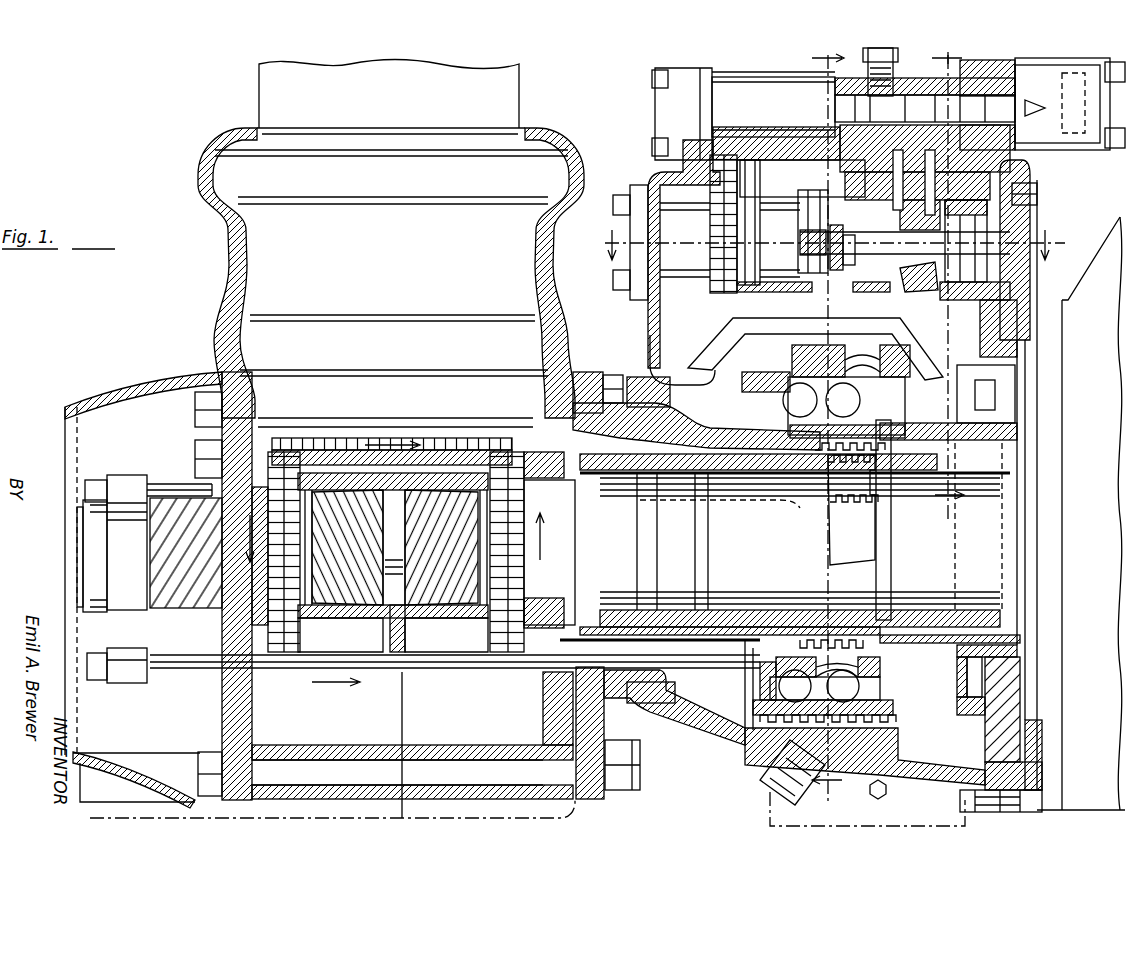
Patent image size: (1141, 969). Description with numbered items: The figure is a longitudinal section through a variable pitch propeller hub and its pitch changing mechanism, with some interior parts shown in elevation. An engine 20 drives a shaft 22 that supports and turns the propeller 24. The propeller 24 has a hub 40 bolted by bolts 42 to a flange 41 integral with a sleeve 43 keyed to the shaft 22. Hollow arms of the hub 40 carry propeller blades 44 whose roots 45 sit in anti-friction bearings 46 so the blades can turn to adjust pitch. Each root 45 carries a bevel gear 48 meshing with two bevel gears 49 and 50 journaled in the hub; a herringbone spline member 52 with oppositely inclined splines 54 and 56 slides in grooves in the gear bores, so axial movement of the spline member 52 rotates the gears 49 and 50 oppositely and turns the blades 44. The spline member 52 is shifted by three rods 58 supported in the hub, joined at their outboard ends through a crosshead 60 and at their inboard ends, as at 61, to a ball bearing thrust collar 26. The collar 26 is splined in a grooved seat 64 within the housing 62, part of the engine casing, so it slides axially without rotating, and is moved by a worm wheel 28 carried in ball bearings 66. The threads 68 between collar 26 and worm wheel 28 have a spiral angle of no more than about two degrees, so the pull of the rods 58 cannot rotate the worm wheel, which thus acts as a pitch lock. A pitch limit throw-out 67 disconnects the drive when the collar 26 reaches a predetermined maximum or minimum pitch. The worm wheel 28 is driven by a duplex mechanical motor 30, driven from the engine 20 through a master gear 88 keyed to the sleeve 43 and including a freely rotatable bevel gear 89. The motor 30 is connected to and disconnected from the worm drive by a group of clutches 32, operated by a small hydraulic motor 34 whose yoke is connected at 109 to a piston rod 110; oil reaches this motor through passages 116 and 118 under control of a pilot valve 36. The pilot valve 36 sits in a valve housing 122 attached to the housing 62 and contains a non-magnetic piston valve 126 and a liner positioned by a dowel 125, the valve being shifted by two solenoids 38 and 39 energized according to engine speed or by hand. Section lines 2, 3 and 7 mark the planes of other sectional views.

The section line 2- 2 is at (819, 422).
The section line 3- 3 is at (832, 245).
The section line 7- 7 is at (950, 281).
The engine 20 is at (1081, 513).
The propeller shaft 22 is at (781, 545).
The propeller 24 is at (196, 293).
The ball bearing thrust collar 26 is at (752, 672).
The worm wheel 28 is at (770, 780).
The duplex mechanical motor 30 is at (1010, 368).
The group of clutches 32 is at (765, 200).
The hydraulic motor 34 is at (1020, 183).
The pilot valve 36 is at (776, 118).
The solenoid 38 is at (1020, 95).
The solenoid 39 is at (660, 122).
The hub 40 is at (230, 255).
The flange 41 is at (585, 372).
The bolts 42 is at (612, 375).
The sleeve 43 is at (718, 432).
The propeller blades 44 is at (259, 98).
The blade roots 45 is at (393, 291).
The anti-friction bearings 46 is at (210, 180).
The bevel gear 48 is at (318, 440).
The bevel gear 49 is at (524, 508).
The bevel gear 50 is at (268, 505).
The herringbone spline member 52 is at (78, 570).
The inclined splines 54 is at (448, 600).
The inclined splines 56 is at (358, 600).
The rods 58 is at (165, 488).
The crosshead 60 is at (114, 612).
The inboard rod connection 61 is at (853, 503).
The housing 62 is at (712, 742).
The grooved seat 64 is at (880, 375).
The ball bearings 66 is at (858, 355).
The pitch limit throw-out 67 is at (796, 341).
The threads 68 is at (893, 716).
The master gear 88 is at (975, 400).
The bevel gear 89 is at (712, 226).
The yoke connection 109 is at (830, 215).
The piston rod 110 is at (851, 247).
The oil passage 116 is at (952, 228).
The oil passage 118 is at (910, 266).
The valve housing 122 is at (728, 77).
The dowel 125 is at (890, 52).
The piston valve 126 is at (912, 95).